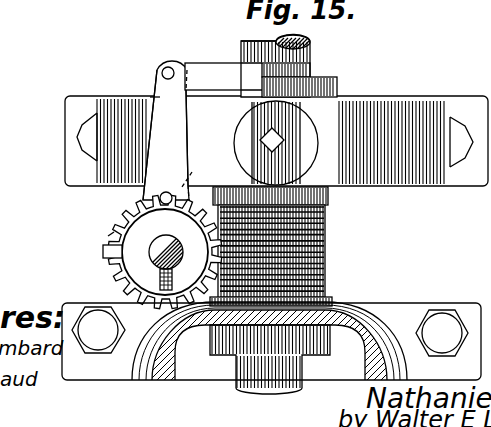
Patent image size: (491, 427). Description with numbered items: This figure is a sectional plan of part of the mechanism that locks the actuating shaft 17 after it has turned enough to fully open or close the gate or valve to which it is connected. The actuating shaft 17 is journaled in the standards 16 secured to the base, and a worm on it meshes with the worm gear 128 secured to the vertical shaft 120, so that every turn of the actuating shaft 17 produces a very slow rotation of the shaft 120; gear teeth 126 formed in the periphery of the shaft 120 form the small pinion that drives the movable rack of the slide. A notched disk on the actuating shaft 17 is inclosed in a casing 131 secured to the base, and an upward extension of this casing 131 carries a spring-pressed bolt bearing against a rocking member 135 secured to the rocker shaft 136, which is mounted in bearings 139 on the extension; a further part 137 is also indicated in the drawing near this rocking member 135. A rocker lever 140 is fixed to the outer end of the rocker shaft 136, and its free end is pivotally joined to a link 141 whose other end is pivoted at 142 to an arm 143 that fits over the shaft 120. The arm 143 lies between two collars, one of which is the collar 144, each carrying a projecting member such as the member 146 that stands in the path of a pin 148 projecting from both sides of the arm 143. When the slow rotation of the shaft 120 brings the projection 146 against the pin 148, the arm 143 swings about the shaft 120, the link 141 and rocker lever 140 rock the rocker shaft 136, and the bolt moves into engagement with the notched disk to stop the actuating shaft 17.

The standards 16 is at (364, 313).
The actuating shaft 17 is at (242, 57).
The shaft 120 is at (150, 261).
The gear teeth 126 is at (328, 252).
The worm gear 128 is at (110, 234).
The casing 131 is at (437, 100).
The rocking member 135 is at (241, 136).
The rocker shaft 136 is at (300, 58).
The hidden link 137 is at (204, 168).
The bearings 139 is at (288, 110).
The rocker lever 140 is at (308, 68).
The link 141 is at (186, 46).
The pivot connection 142 is at (162, 72).
The arm 143 is at (162, 96).
The collar 144 is at (147, 229).
The projecting member 146 is at (103, 251).
The pin 148 is at (159, 193).